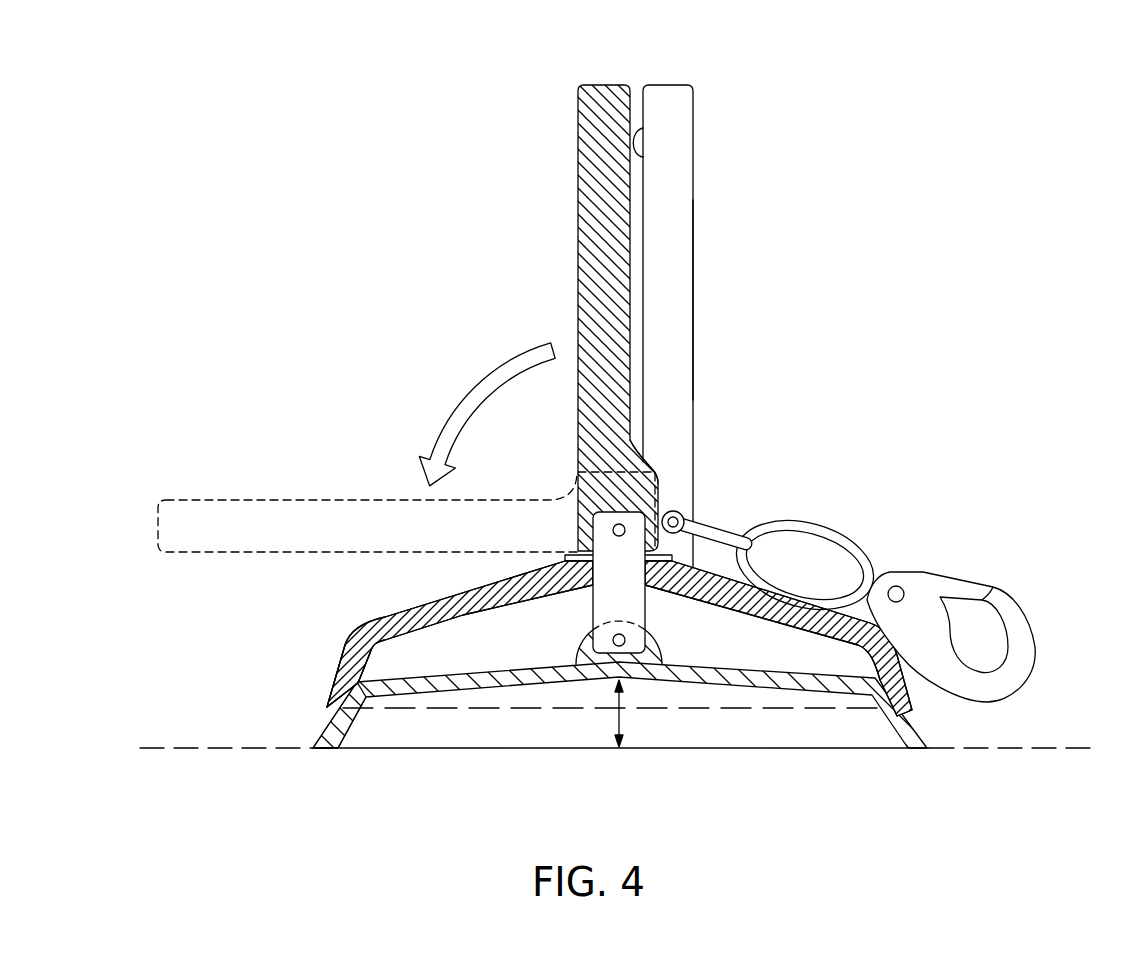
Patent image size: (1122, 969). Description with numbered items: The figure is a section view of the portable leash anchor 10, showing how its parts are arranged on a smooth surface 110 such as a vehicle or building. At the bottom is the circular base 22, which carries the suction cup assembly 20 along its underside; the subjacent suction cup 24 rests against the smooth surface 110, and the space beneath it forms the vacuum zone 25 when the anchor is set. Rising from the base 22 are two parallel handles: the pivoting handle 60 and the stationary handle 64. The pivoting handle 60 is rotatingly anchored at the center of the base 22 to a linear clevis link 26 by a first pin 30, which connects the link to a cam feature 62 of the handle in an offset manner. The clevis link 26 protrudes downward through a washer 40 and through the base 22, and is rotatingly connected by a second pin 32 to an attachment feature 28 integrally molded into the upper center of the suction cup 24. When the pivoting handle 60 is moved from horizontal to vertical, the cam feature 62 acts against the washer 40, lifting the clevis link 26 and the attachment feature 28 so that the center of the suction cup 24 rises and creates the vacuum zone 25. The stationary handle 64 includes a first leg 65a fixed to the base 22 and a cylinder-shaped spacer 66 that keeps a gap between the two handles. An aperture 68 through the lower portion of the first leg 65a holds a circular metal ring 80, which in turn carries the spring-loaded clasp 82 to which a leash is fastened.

The portable leash anchor 10 is at (888, 40).
The suction cup assembly 20 is at (318, 709).
The base 22 is at (330, 682).
The suction cup 24 is at (410, 692).
The vacuum zone 25 is at (673, 733).
The clevis link 26 is at (608, 607).
The attachment feature 28 is at (660, 650).
The first pin 30 is at (608, 640).
The second pin 32 is at (612, 530).
The washer 40 is at (565, 557).
The pivoting handle 60 is at (604, 84).
The cam feature 62 is at (647, 463).
The stationary handle 64 is at (668, 84).
The first leg 65a is at (695, 297).
The spacer 66 is at (640, 144).
The aperture 68 is at (676, 511).
The metal ring 80 is at (741, 535).
The clasp 82 is at (905, 577).
The smooth surface 110 is at (983, 750).